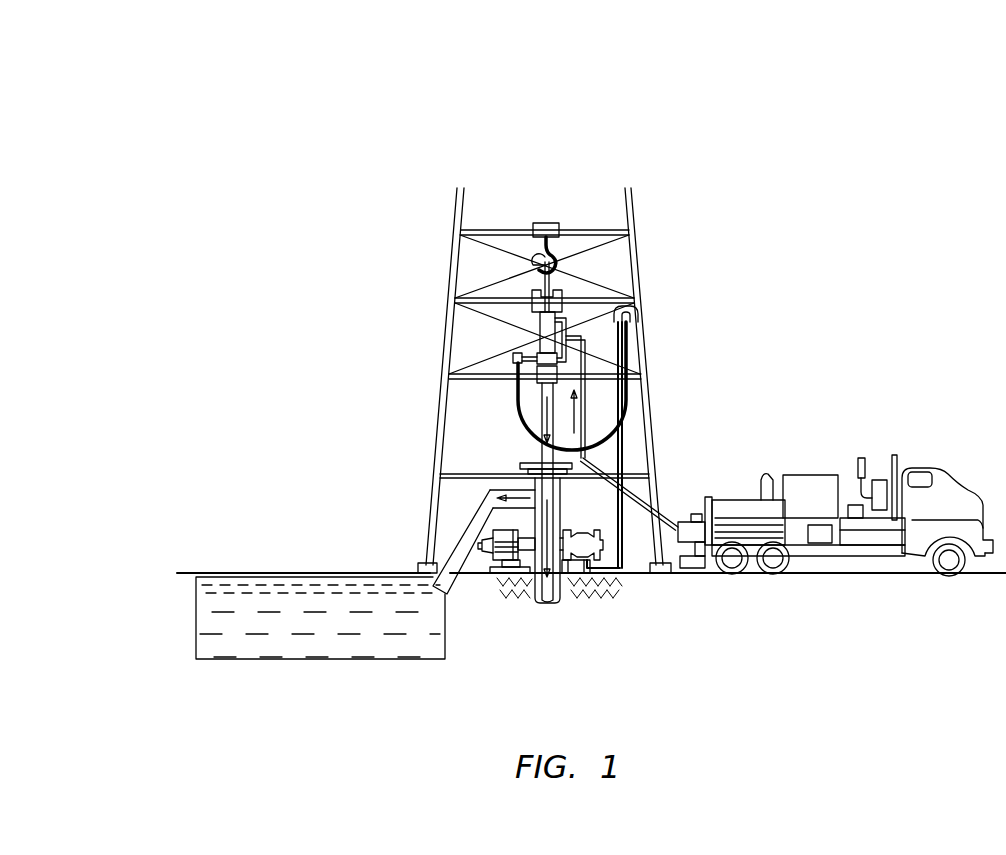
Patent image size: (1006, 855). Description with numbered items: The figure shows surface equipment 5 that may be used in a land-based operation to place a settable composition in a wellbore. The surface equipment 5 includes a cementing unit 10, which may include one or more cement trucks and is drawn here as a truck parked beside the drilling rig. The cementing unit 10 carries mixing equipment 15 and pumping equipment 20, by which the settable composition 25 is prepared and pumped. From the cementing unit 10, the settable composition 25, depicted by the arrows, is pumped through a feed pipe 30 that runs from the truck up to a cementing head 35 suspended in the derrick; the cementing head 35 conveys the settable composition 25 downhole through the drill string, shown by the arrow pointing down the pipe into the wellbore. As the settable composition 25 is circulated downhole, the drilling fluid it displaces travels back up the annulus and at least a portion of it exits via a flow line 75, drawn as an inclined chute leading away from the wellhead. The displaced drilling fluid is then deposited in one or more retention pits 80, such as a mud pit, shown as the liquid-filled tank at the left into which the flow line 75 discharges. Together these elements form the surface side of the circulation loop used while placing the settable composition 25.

The surface equipment 5 is at (868, 232).
The cementing unit 10 is at (835, 542).
The mixing equipment 15 is at (805, 476).
The pumping equipment 20 is at (725, 497).
The settable composition 25 is at (543, 410).
The feed pipe 30 is at (635, 480).
The cementing head 35 is at (578, 295).
The flow line 75 is at (462, 560).
The retention pit 80 is at (244, 660).